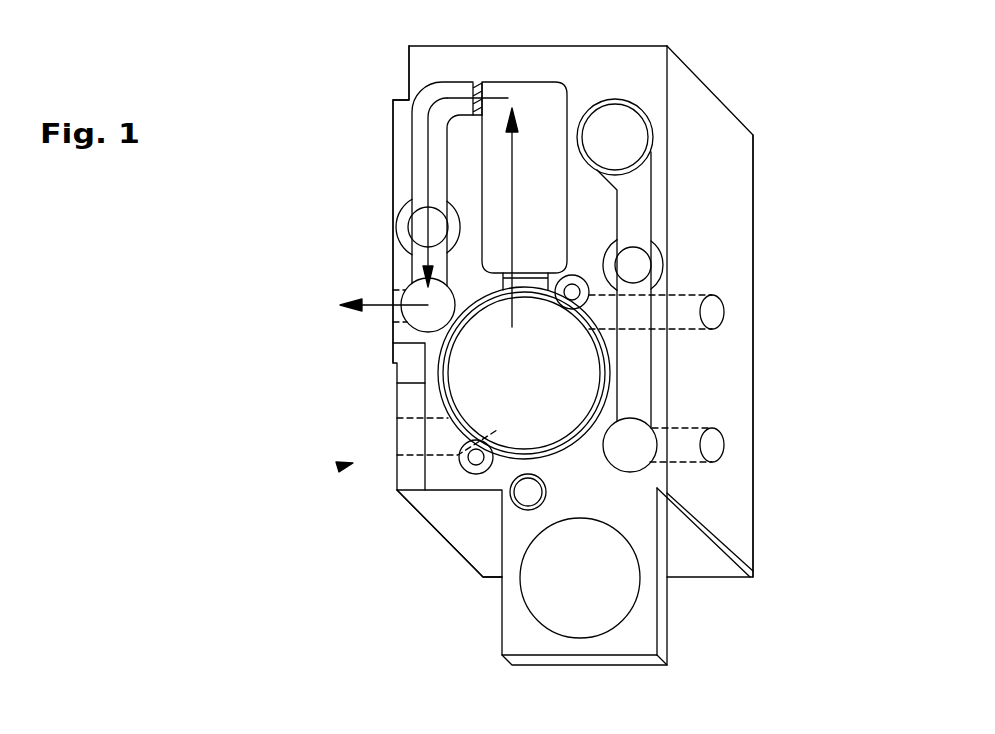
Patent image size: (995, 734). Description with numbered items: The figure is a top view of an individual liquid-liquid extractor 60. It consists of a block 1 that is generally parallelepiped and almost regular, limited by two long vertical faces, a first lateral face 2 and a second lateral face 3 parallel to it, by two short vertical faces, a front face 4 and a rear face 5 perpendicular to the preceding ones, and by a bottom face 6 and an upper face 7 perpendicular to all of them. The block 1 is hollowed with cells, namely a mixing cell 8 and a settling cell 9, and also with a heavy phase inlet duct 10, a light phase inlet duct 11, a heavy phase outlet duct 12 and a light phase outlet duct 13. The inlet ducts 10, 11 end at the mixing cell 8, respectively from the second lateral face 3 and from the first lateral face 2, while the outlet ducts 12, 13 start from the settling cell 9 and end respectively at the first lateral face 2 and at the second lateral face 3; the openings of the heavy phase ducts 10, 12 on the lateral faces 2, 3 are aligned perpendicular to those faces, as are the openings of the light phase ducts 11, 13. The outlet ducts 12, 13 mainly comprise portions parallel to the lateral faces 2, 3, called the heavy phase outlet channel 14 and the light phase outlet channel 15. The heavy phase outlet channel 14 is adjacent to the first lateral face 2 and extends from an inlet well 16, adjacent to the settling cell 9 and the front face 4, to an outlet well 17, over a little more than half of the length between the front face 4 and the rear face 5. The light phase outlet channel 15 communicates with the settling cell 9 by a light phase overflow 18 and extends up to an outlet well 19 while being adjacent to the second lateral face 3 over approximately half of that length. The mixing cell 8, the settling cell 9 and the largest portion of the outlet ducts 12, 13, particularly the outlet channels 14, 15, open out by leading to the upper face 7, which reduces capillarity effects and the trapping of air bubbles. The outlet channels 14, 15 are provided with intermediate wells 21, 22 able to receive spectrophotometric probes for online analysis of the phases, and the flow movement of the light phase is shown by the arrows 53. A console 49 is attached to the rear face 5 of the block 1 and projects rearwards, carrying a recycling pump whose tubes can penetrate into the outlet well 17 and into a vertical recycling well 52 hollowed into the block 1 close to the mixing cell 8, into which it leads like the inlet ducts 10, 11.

The block 1 is at (733, 182).
The first lateral face 2 is at (702, 140).
The second lateral face 3 is at (393, 230).
The front face 4 is at (578, 46).
The rear face 5 is at (465, 518).
The bottom face 6 is at (753, 400).
The upper face 7 is at (437, 72).
The mixing cell 8 is at (468, 467).
The settling cell 9 is at (543, 132).
The heavy phase inlet duct 10 is at (397, 443).
The light phase inlet duct 11 is at (712, 312).
The heavy phase outlet duct 12 is at (712, 445).
The light phase outlet duct 13 is at (392, 313).
The heavy phase outlet channel 14 is at (635, 373).
The light phase outlet channel 15 is at (420, 148).
The inlet well 16 is at (615, 123).
The outlet well 17 is at (630, 457).
The light phase overflow 18 is at (482, 100).
The outlet well 19 is at (399, 366).
The intermediate well 21 is at (638, 265).
The intermediate well 22 is at (427, 227).
The console 49 is at (640, 623).
The recycling well 52 is at (518, 497).
The arrows 53 is at (510, 182).
The liquid-liquid extractor 60 is at (338, 467).